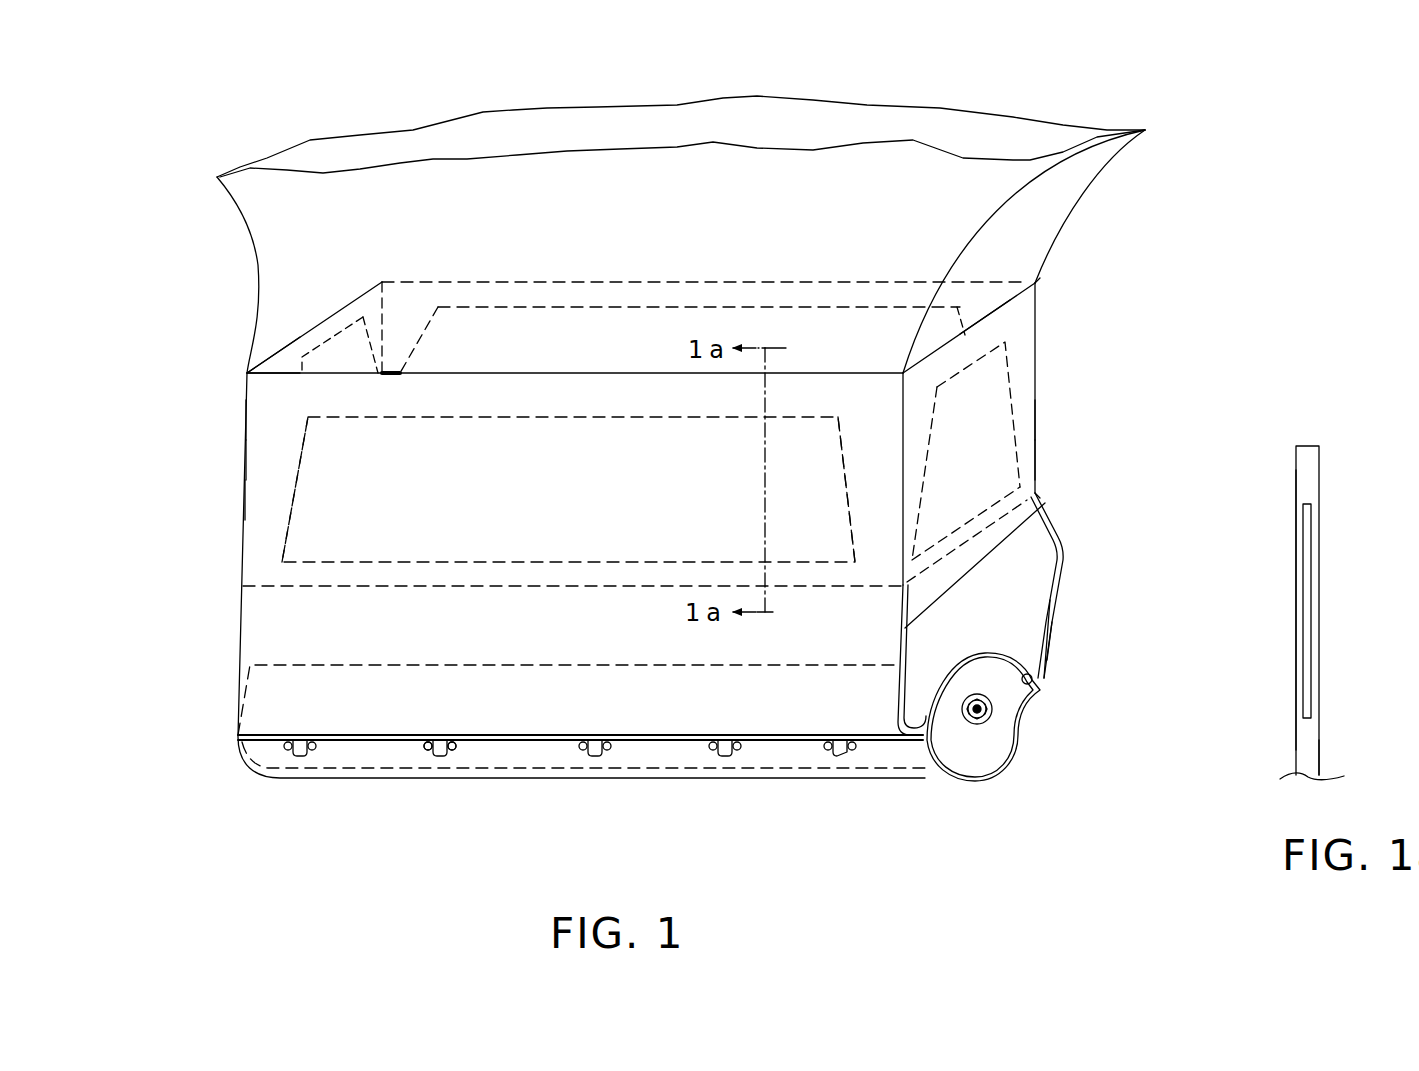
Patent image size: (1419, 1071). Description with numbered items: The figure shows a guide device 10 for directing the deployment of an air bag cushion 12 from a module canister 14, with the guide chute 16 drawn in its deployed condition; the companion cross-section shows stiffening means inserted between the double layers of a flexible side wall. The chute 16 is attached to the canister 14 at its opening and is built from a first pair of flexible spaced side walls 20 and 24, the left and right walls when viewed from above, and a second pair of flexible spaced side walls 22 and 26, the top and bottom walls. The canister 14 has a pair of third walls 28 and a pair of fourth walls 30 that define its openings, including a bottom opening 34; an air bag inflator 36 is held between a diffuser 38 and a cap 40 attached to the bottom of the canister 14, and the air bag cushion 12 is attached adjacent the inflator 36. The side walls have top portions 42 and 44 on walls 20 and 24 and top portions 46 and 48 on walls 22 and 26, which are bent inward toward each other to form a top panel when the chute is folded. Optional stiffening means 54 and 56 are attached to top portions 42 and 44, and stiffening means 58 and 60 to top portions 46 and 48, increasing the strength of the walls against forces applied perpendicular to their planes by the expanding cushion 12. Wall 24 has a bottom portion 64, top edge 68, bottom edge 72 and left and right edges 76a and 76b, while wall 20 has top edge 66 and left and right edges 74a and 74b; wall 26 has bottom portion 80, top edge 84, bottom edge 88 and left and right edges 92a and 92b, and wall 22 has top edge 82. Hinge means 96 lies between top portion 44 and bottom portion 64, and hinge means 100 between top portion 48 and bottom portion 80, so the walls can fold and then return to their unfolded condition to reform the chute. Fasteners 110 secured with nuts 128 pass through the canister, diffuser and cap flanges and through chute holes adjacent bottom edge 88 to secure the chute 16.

In FIG. 1, the guide device 10 is at (238, 627).
In FIG. 1, the air bag cushion 12 is at (681, 136).
In FIG. 1, the module canister 14 is at (1060, 528).
In FIG. 1, the chute 16 is at (1036, 358).
In FIG. 1, the first pair of flexible spaced side walls (left wall) 20 is at (248, 380).
In FIG. 1, the second pair of flexible spaced side walls (top wall) 22 is at (1040, 282).
In FIG. 1, the first pair of flexible spaced side walls (right wall) 24 is at (1045, 296).
In FIG. 1, the second pair of flexible spaced side walls (bottom wall) 26 is at (250, 428).
In FIG. 1, the third walls 28 is at (1022, 634).
In FIG. 1, the fourth walls 30 is at (1063, 558).
In FIG. 1, the bottom opening 34 is at (1040, 688).
In FIG. 1, the air bag inflator 36 is at (1000, 732).
In FIG. 1, the diffuser 38 is at (1033, 678).
In FIG. 1, the cap 40 is at (640, 779).
In FIG. 1, the top portion of side wall 20 42 is at (335, 318).
In FIG. 1, the top portion of side wall 24 44 is at (1025, 452).
In FIG. 1, the top portion of side wall 22 46 is at (852, 306).
In FIG. 1, the top portion of side wall 26 48 is at (250, 466).
In FIG. 1A, the top portion of side wall 26 48 is at (1295, 493).
In FIG. 1, the stiffening means 54 is at (318, 350).
In FIG. 1, the stiffening means 56 is at (1005, 420).
In FIG. 1, the stiffening means 58 is at (937, 320).
In FIG. 1, the stiffening means 60 is at (290, 556).
In FIG. 1A, the stiffening means 60 is at (1304, 596).
In FIG. 1, the bottom portion of side wall 24 64 is at (1038, 500).
In FIG. 1, the top edge of side wall 20 66 is at (248, 352).
In FIG. 1, the top edge of side wall 24 68 is at (1010, 300).
In FIG. 1, the bottom edge of side wall 24 72 is at (968, 588).
In FIG. 1, the left edge of side wall 20 74a is at (314, 314).
In FIG. 1, the right edge of side wall 20 74b is at (245, 500).
In FIG. 1, the left edge of side wall 24 76a is at (906, 515).
In FIG. 1, the right edge of side wall 24 76b is at (1030, 466).
In FIG. 1, the bottom portion of side wall 26 80 is at (245, 660).
In FIG. 1, the top edge of side wall 22 82 is at (452, 280).
In FIG. 1, the top edge of side wall 26 84 is at (385, 380).
In FIG. 1A, the top edge of side wall 26 84 is at (1315, 446).
In FIG. 1, the bottom edge of side wall 26 88 is at (238, 737).
In FIG. 1, the left edge of side wall 26 92a is at (248, 510).
In FIG. 1, the right edge of side wall 26 92b is at (897, 390).
In FIG. 1, the hinge means 96 is at (964, 548).
In FIG. 1, the hinge means 100 is at (374, 590).
In FIG. 1A, the hinge means 100 is at (1295, 753).
In FIG. 1, the fasteners 110 is at (435, 750).
In FIG. 1, the nuts 128 is at (573, 752).